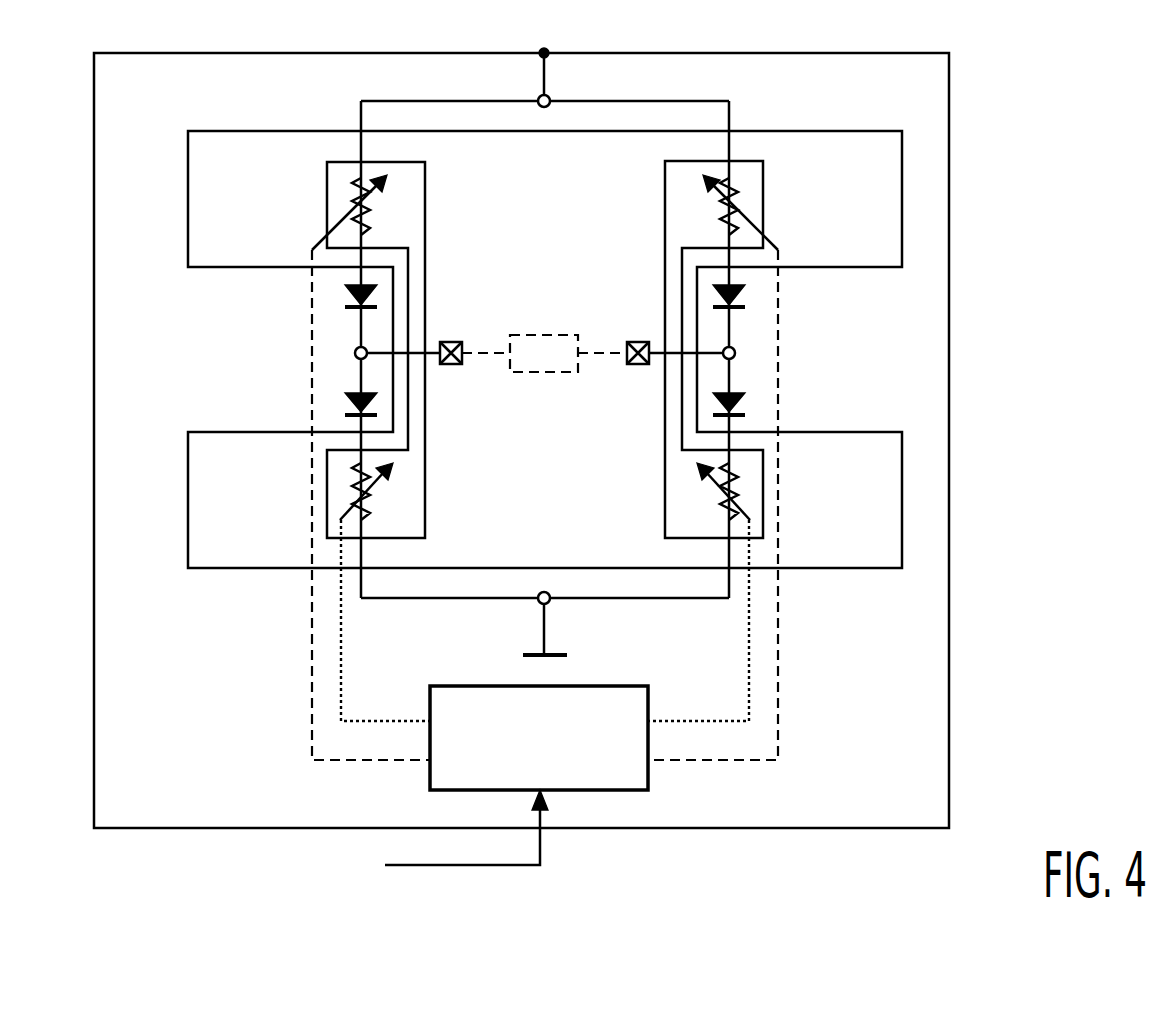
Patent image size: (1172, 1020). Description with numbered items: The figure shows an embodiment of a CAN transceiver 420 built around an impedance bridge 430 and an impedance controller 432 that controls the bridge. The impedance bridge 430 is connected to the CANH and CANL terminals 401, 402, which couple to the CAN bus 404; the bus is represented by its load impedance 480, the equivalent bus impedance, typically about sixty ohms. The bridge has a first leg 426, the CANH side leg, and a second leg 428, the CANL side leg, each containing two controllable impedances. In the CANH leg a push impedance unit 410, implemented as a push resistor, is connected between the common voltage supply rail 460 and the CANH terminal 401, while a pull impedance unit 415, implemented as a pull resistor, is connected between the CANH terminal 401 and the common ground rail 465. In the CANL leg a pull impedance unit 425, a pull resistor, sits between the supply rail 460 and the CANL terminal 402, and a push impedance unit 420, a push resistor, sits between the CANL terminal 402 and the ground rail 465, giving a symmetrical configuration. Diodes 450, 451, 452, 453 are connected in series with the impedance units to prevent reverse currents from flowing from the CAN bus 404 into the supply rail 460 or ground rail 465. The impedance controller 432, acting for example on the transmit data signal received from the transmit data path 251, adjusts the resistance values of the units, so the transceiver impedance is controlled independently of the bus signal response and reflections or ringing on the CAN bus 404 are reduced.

The common voltage supply rail 460 is at (590, 89).
The common ground rail 465 is at (598, 641).
The impedance bridge 430 is at (188, 184).
The first leg 426 is at (327, 163).
The second leg 428 is at (763, 160).
The push impedance unit 410 is at (355, 203).
The pull impedance unit 415 is at (340, 497).
The pull impedance unit 425 is at (735, 192).
The CAN transceiver 420 is at (740, 498).
The diode 450 is at (345, 297).
The diode 451 is at (345, 402).
The diode 452 is at (745, 299).
The diode 453 is at (745, 402).
The CANH terminal 401 is at (455, 365).
The CANL terminal 402 is at (637, 365).
The CAN bus 404 is at (487, 353).
The load impedance 480 is at (549, 335).
The impedance controller 432 is at (648, 705).
The TXD path 251 is at (428, 898).